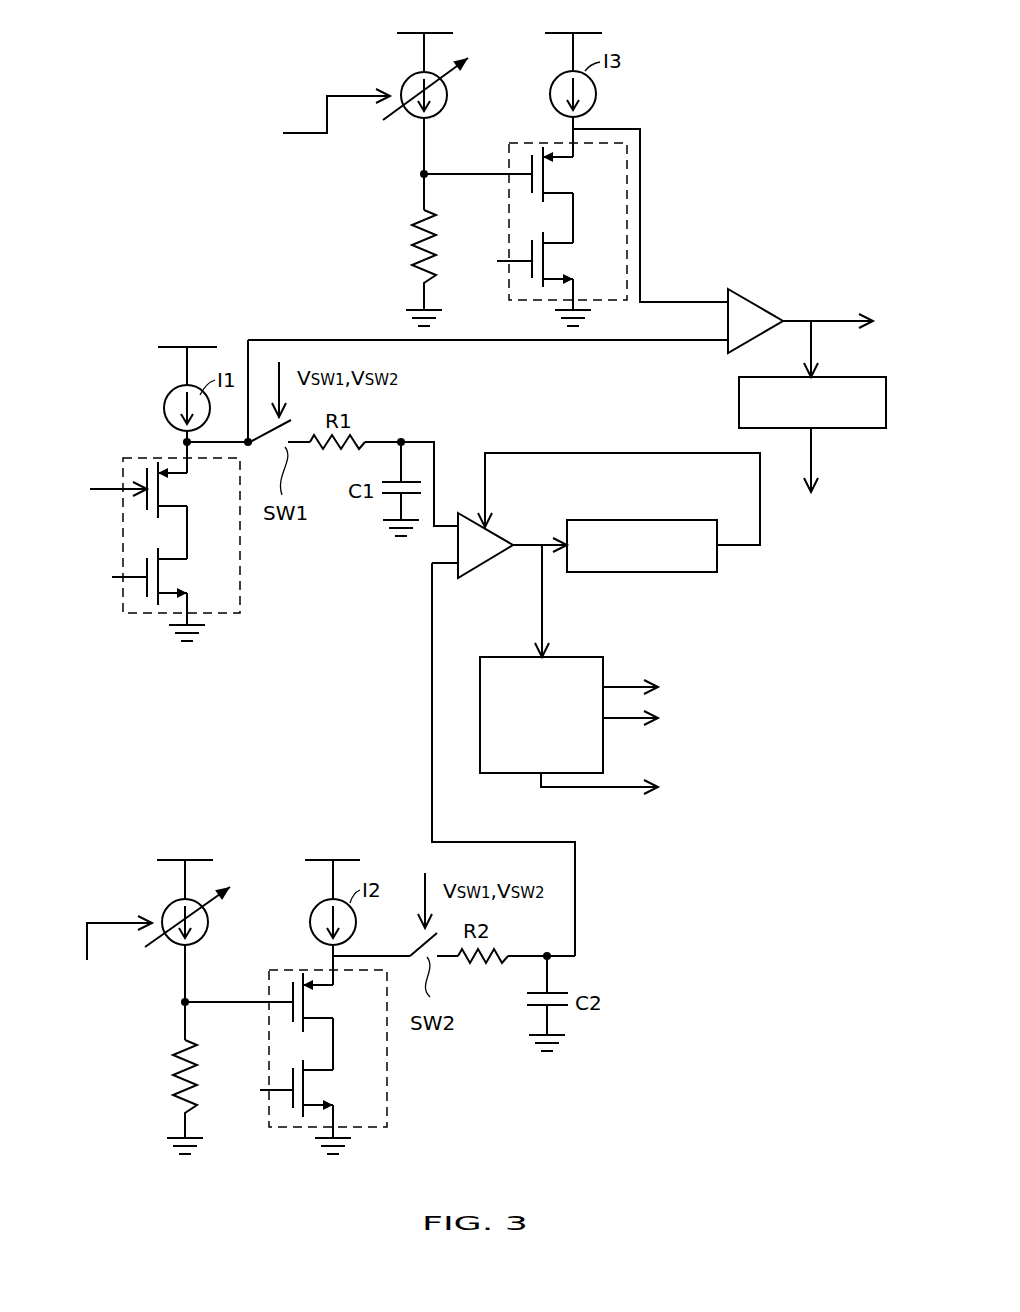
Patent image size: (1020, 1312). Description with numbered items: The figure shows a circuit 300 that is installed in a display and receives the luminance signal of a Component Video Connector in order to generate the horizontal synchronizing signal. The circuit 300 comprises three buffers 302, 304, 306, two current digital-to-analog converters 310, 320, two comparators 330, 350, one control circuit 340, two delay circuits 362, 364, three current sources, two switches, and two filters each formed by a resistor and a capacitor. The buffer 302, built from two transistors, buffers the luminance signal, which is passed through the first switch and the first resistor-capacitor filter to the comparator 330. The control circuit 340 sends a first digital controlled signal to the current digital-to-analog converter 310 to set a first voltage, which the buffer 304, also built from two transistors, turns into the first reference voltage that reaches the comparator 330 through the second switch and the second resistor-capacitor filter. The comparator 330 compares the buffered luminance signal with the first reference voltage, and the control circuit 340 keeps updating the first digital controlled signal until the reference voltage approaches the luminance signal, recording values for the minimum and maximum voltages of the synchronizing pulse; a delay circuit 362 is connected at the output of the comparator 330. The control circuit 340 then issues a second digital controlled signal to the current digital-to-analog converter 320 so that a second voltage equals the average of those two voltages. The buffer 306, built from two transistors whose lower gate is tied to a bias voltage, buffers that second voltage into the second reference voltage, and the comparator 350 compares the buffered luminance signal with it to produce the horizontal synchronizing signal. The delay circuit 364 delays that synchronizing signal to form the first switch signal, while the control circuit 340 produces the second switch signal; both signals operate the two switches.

The circuit 300 is at (712, 116).
The buffer 302 is at (138, 456).
The buffer 304 is at (282, 970).
The buffer 306 is at (520, 143).
The current digital-to-analog converter 310 is at (170, 902).
The current digital-to-analog converter 320 is at (412, 76).
The comparator 330 is at (498, 537).
The control circuit 340 is at (583, 657).
The comparator 350 is at (755, 303).
The delay circuit 362 is at (697, 520).
The delay circuit 364 is at (854, 377).